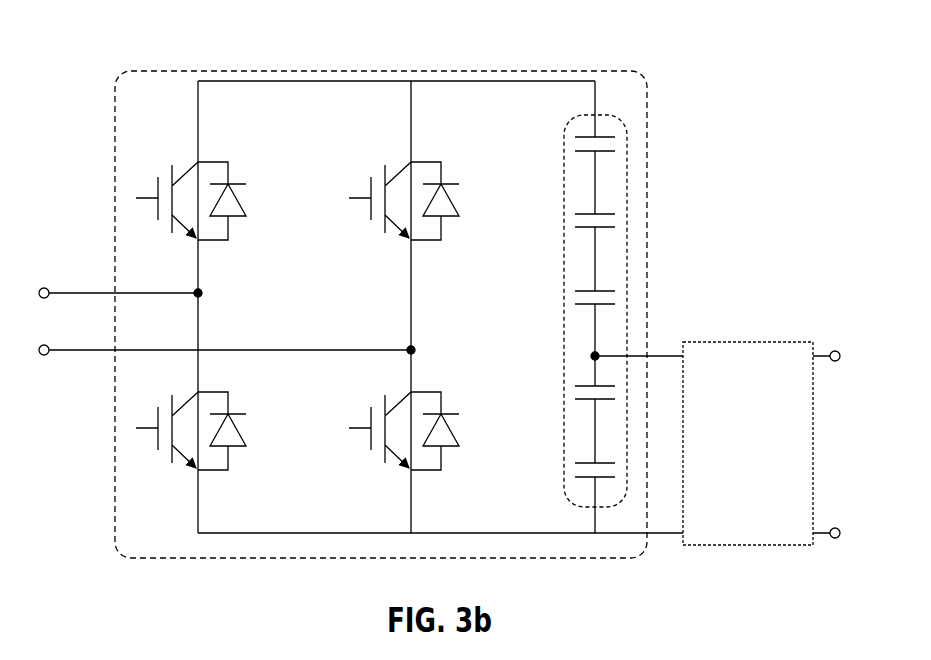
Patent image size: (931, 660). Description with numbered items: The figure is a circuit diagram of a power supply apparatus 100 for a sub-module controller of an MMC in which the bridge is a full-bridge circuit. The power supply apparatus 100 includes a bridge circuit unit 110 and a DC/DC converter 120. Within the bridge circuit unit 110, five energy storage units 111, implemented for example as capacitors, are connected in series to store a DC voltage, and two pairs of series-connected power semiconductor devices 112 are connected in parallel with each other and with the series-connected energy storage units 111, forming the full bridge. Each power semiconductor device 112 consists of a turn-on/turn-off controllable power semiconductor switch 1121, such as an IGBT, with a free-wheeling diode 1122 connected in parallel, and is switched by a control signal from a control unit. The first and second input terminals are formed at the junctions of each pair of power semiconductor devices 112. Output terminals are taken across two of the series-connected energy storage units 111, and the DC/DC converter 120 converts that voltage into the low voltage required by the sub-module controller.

The power supply apparatus 100 is at (731, 60).
The bridge circuit unit 110 is at (545, 71).
The energy storage unit 111 is at (627, 178).
The power semiconductor device 112 is at (260, 240).
The power semiconductor switch 1121 is at (157, 222).
The free-wheeling diode 1122 is at (240, 204).
The DC/DC converter 120 is at (750, 342).